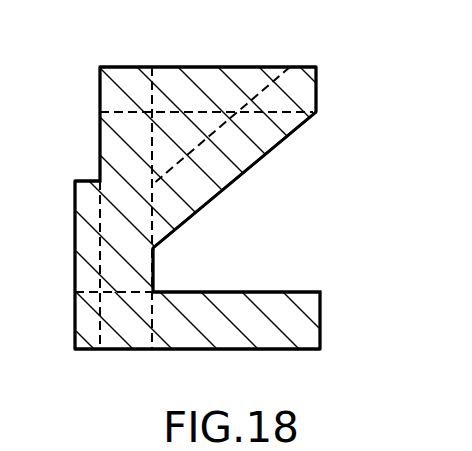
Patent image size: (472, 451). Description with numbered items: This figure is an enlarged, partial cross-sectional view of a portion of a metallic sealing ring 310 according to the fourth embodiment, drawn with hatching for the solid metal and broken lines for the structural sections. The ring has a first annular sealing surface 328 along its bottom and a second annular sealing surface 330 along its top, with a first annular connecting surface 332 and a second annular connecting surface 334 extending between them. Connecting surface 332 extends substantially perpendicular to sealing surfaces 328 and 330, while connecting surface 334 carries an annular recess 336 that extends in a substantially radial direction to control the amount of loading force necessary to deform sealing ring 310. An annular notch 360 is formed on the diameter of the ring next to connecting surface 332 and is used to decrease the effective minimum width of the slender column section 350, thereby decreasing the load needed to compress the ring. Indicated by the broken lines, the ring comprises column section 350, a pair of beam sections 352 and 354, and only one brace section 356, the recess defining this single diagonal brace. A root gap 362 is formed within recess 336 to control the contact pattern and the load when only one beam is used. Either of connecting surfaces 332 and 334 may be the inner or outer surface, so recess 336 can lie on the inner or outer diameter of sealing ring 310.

The metallic sealing ring 310 is at (84, 69).
The first annular sealing surface 328 is at (284, 350).
The second annular sealing surface 330 is at (278, 67).
The first annular connecting surface 332 is at (75, 320).
The second annular connecting surface 334 is at (317, 80).
The annular recess 336 is at (258, 159).
The column section 350 is at (110, 258).
The beam section 352 is at (306, 121).
The beam section 354 is at (304, 307).
The brace section 356 is at (208, 162).
The annular notch 360 is at (88, 181).
The root gap 362 is at (153, 278).